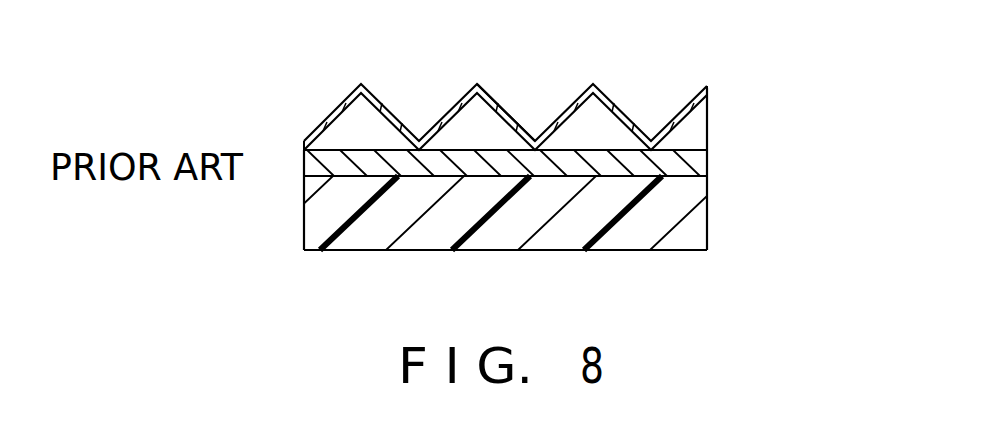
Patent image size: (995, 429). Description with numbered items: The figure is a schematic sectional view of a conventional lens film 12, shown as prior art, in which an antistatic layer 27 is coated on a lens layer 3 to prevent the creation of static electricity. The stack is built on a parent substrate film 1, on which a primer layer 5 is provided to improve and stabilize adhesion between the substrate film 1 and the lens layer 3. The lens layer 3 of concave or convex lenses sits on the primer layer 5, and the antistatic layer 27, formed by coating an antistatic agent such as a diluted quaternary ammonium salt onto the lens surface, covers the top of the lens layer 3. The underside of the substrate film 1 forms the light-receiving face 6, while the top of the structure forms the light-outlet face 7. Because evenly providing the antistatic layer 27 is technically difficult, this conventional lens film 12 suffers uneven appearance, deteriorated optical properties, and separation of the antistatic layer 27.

The substrate film 1 is at (693, 232).
The lens layer 3 is at (697, 130).
The primer layer 5 is at (700, 167).
The light-receiving face 6 is at (498, 252).
The light-outlet face 7 is at (499, 104).
The conventional lens film 12 is at (822, 65).
The antistatic layer 27 is at (703, 88).